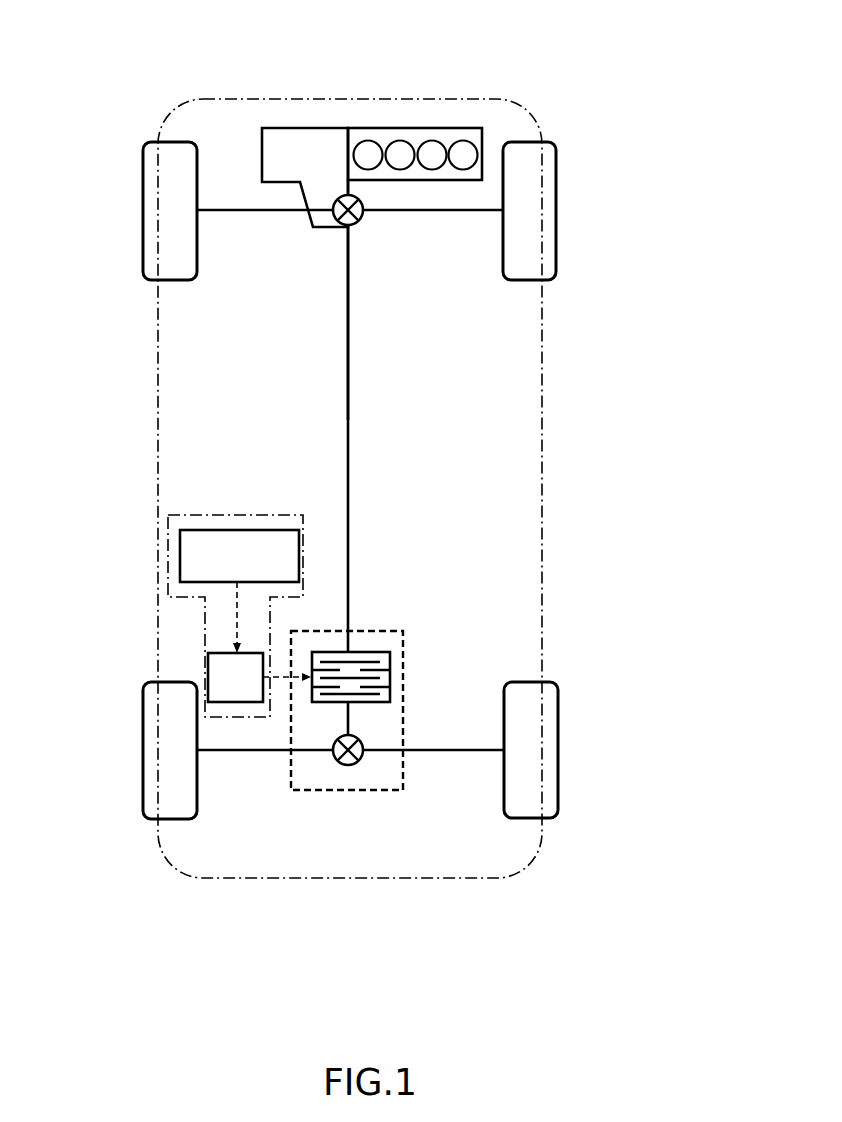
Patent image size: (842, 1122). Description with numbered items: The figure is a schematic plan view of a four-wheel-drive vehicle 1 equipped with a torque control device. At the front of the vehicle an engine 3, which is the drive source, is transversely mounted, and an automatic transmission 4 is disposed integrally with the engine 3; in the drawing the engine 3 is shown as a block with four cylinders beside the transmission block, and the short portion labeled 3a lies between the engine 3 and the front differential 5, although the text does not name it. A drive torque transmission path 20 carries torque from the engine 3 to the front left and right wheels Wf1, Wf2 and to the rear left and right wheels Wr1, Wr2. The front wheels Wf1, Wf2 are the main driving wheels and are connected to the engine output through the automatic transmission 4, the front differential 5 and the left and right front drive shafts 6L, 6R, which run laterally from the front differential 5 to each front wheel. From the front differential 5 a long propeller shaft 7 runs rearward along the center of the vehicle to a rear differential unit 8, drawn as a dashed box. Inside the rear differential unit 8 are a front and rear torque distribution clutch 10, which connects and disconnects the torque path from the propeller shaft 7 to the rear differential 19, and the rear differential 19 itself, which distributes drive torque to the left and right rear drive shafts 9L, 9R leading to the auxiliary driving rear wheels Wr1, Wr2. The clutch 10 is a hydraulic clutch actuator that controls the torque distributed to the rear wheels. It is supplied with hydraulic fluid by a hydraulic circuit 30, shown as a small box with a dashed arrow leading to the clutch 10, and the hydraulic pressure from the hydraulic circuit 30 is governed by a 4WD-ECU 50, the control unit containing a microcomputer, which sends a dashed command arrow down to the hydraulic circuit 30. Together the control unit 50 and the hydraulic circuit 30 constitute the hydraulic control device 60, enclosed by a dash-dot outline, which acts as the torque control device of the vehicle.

The four-wheel-drive vehicle 1 is at (537, 93).
The engine 3 is at (418, 128).
The engine output shaft 3a is at (350, 186).
The automatic transmission 4 is at (290, 128).
The front differential 5 is at (357, 224).
The left front drive shaft 6L is at (282, 212).
The right front drive shaft 6R is at (443, 212).
The propeller shaft 7 is at (351, 494).
The rear differential unit 8 is at (383, 631).
The left rear drive shaft 9L is at (277, 752).
The right rear drive shaft 9R is at (445, 752).
The front and rear torque distribution clutch 10 is at (391, 676).
The rear differential 19 is at (351, 766).
The drive torque transmission path 20 is at (344, 388).
The hydraulic circuit 30 is at (206, 668).
The 4WD-ECU 50 is at (276, 530).
The hydraulic control device 60 is at (204, 515).
The front left wheel Wf1 is at (143, 183).
The front right wheel Wf2 is at (556, 184).
The rear left wheel Wr1 is at (143, 740).
The rear right wheel Wr2 is at (558, 742).